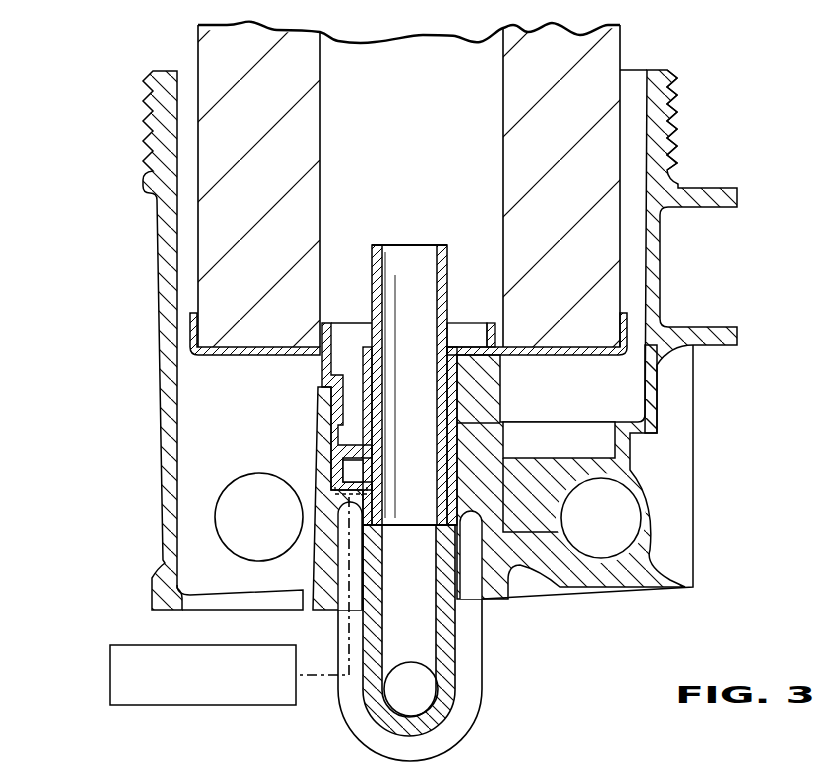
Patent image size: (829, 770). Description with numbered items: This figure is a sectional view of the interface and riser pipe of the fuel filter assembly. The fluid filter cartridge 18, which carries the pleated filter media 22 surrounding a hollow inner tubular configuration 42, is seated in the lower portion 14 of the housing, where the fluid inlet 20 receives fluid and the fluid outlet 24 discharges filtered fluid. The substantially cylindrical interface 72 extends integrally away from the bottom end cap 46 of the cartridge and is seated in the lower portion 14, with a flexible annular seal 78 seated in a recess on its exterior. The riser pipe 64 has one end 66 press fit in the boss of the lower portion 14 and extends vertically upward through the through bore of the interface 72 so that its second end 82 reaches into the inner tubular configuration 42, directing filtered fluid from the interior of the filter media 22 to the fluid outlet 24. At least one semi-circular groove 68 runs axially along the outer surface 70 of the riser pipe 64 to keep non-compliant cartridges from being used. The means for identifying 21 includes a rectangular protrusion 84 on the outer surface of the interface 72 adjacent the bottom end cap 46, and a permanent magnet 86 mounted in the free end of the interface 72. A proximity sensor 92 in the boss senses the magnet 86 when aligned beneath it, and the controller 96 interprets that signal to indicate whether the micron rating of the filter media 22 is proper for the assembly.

The lower portion 14 is at (160, 468).
The fluid filter cartridge 18 is at (622, 60).
The fluid inlet 20 is at (603, 543).
The means for identifying 21 is at (310, 435).
The filter media 22 is at (608, 175).
The fluid outlet 24 is at (425, 692).
The inner tubular configuration 42 is at (360, 120).
The bottom end cap 46 is at (190, 330).
The riser pipe 64 is at (370, 288).
The one end 66 is at (410, 527).
The semi-circular groove 68 is at (373, 286).
The outer surface 70 is at (423, 308).
The interface 72 is at (475, 425).
The flexible annular seal 78 is at (460, 448).
The second end 82 is at (405, 245).
The protrusion 84 is at (330, 368).
The permanent magnet 86 is at (343, 478).
The proximity sensor 92 is at (340, 487).
The controller 96 is at (115, 688).